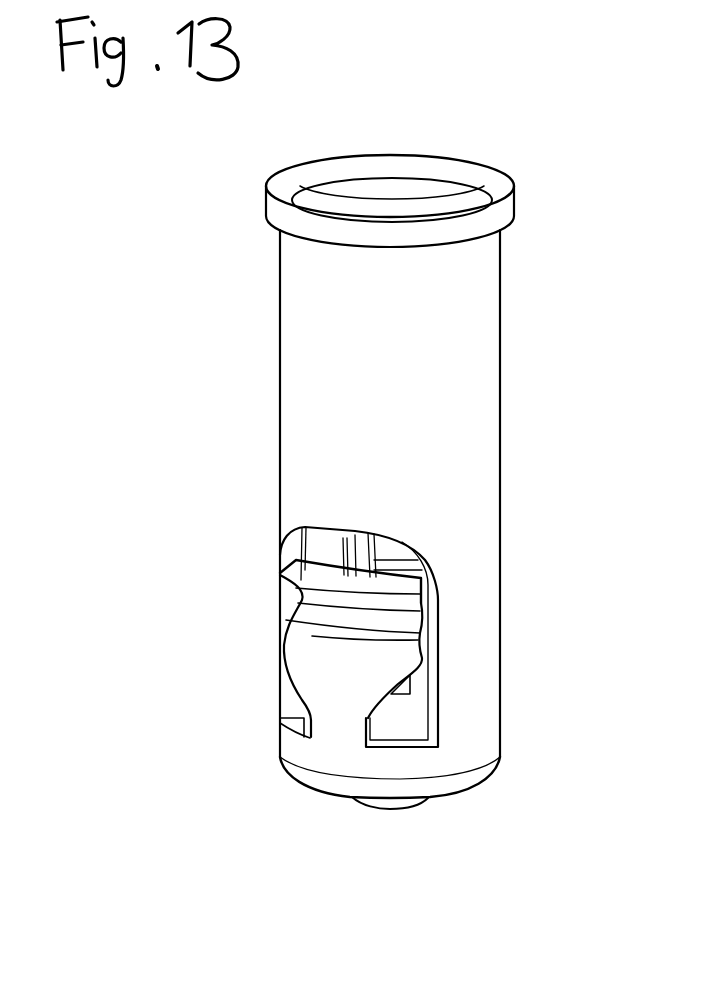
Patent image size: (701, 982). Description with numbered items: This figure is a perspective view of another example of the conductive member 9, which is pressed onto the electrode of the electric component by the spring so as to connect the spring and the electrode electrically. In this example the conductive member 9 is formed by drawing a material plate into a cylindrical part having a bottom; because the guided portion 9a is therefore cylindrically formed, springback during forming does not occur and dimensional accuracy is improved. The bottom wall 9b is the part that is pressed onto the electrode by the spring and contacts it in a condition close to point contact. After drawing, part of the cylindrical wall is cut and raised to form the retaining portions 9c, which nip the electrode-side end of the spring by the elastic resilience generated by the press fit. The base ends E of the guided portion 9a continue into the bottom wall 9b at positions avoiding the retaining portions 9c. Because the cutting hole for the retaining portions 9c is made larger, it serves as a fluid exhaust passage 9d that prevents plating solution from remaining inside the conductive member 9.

The conductive member 9 is at (388, 532).
The guided portion 9a is at (508, 349).
The bottom wall 9b is at (388, 803).
The retaining portions 9c is at (333, 663).
The fluid exhaust passage 9d is at (410, 715).
The base ends E is at (334, 740).